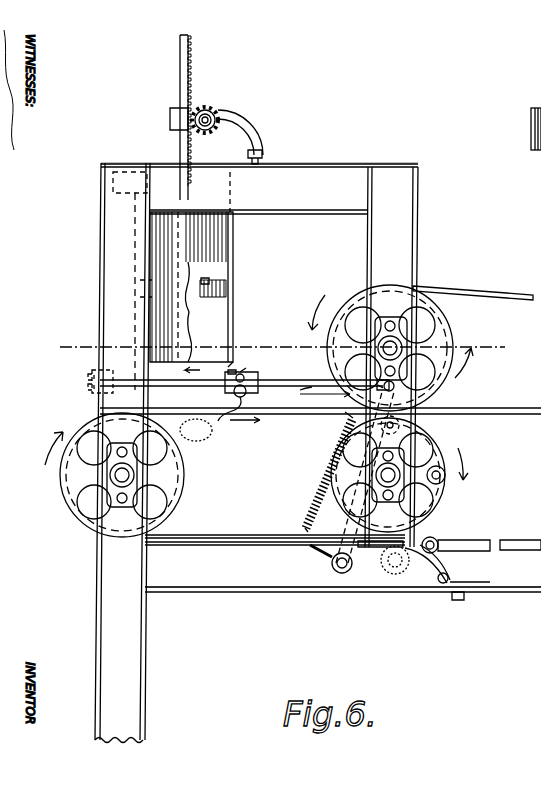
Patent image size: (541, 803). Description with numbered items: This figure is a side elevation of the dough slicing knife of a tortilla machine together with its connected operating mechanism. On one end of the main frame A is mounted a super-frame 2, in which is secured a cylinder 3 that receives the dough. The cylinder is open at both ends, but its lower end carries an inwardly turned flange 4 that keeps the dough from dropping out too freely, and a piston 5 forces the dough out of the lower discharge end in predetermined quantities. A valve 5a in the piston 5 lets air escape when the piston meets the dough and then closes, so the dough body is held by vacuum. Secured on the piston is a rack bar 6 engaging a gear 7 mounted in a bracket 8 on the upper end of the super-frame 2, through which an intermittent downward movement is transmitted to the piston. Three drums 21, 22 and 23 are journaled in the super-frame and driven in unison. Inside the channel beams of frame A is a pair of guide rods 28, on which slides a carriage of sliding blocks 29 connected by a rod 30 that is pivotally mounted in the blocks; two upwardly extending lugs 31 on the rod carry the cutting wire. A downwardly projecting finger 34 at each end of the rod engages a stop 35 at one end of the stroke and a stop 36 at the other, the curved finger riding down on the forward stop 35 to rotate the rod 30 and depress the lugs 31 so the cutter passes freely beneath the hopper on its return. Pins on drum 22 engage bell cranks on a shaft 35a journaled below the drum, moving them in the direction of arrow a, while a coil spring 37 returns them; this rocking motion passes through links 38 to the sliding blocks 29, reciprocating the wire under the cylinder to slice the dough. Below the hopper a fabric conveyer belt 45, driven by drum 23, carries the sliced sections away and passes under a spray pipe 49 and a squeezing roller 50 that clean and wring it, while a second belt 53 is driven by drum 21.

The super-frame 2 is at (334, 190).
The cylinder 3 is at (233, 241).
The inwardly turned flange 4 is at (233, 365).
The piston 5 is at (232, 292).
The valve 5a is at (210, 284).
The rack bar 6 is at (180, 78).
The gear 7 is at (213, 109).
The bracket 8 is at (254, 147).
The drum 21 is at (450, 334).
The drum 22 is at (435, 500).
The drum 23 is at (63, 468).
The guide rods 28 is at (120, 384).
The sliding blocks 29 is at (246, 375).
The rod 30 is at (296, 391).
The lugs 31 is at (246, 368).
The finger 34 is at (220, 396).
The stop 35 is at (196, 430).
The shaft 35a is at (338, 573).
The stop 36 is at (312, 559).
The coil spring 37 is at (313, 498).
The links 38 is at (310, 387).
The conveyer belt 45 is at (302, 414).
The spray pipe 49 is at (438, 580).
The squeezing roller 50 is at (383, 560).
The belt 53 is at (487, 292).
The arrow a is at (325, 400).
The main frame A is at (260, 583).